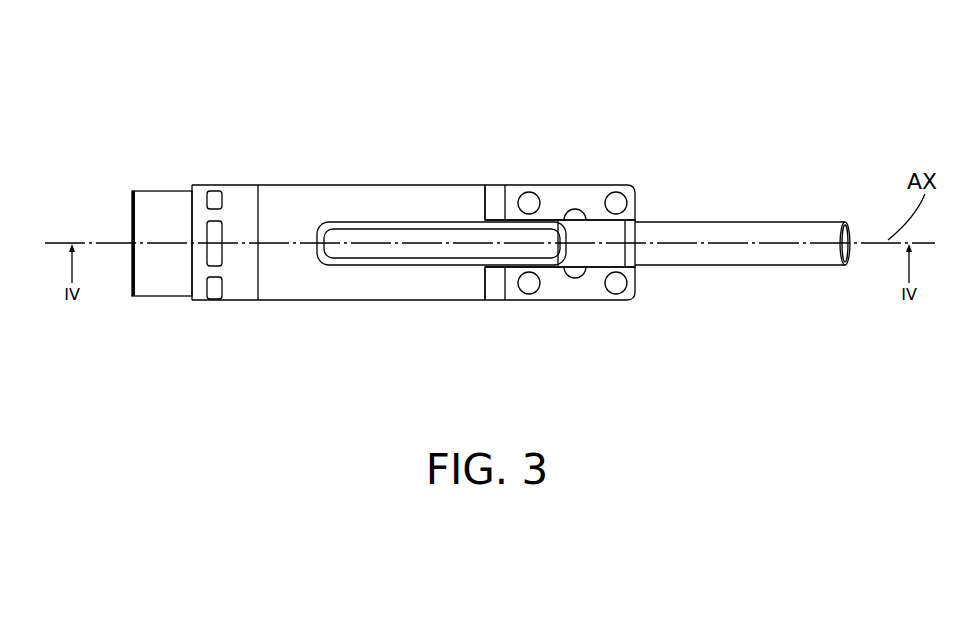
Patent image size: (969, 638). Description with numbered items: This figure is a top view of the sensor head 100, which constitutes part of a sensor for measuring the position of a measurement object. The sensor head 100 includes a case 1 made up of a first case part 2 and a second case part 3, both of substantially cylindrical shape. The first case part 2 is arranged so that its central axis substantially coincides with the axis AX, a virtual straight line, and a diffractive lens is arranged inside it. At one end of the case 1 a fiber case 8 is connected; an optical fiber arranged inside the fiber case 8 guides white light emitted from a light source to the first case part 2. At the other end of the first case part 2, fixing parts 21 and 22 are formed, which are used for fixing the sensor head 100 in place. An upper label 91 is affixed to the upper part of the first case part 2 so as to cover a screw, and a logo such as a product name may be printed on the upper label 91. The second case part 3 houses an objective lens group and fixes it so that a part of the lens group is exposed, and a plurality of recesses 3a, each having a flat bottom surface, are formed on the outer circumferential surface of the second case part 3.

The sensor head 100 is at (527, 96).
The case 1 is at (195, 386).
The first case part 2 is at (317, 301).
The second case part 3 is at (240, 301).
The recesses 3a is at (213, 190).
The upper label 91 is at (345, 230).
The fixing part 22 is at (580, 186).
The fixing part 21 is at (618, 301).
The fiber case 8 is at (758, 221).